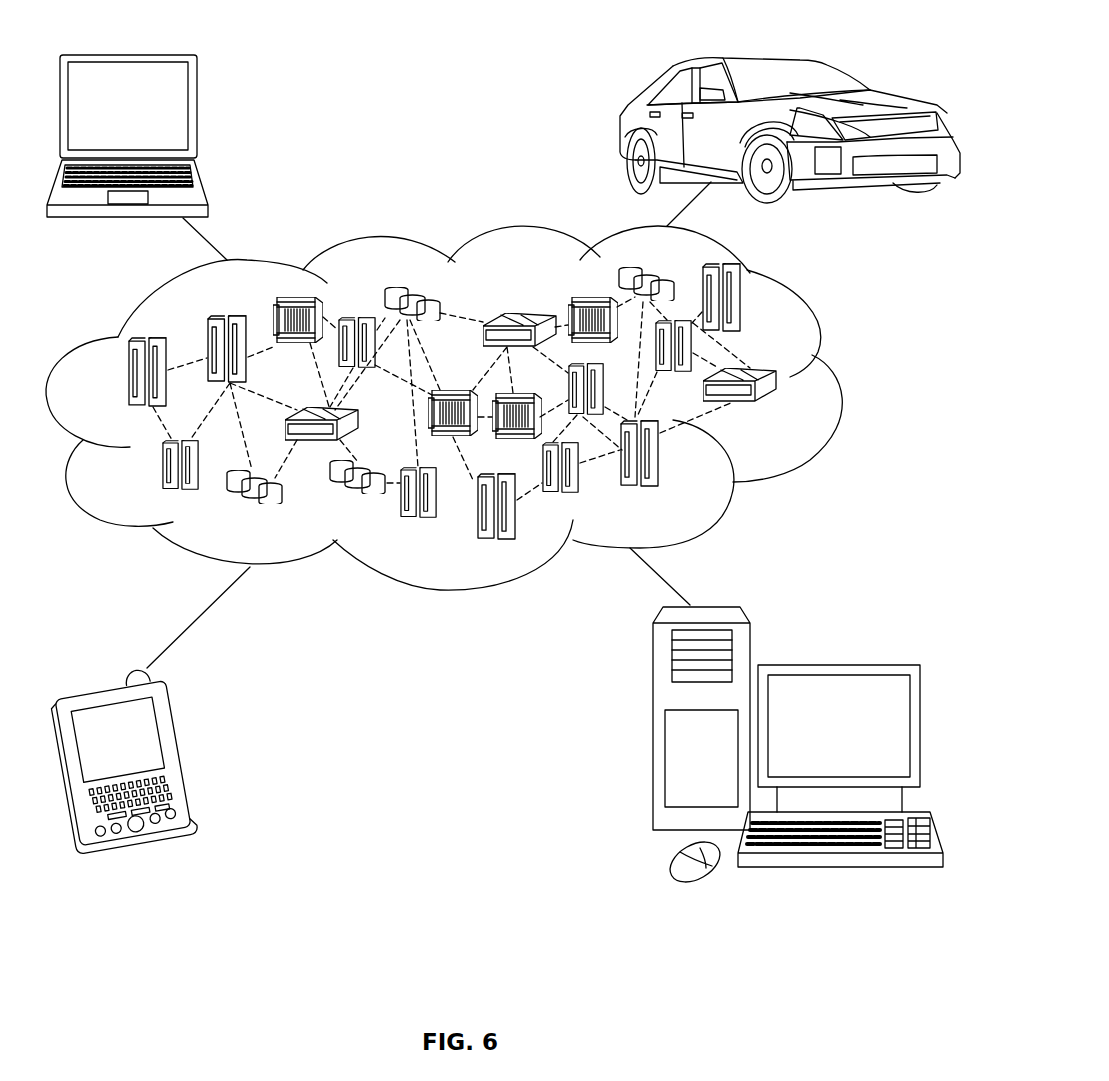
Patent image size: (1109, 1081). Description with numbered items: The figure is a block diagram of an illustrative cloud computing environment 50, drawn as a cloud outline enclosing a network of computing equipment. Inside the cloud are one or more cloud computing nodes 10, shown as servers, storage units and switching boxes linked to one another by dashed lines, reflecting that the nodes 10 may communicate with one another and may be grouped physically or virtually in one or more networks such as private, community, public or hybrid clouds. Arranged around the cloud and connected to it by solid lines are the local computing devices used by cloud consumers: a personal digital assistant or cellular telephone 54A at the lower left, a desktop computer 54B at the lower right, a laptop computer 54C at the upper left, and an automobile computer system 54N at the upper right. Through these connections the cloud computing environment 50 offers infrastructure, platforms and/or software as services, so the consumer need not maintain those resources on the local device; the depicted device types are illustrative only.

The cloud computing node 10 is at (780, 410).
The cloud computing environment 50 is at (838, 380).
The personal digital assistant or cellular telephone 54A is at (183, 753).
The desktop computer 54B is at (836, 665).
The laptop computer 54C is at (197, 116).
The automobile computer system 54N is at (618, 128).